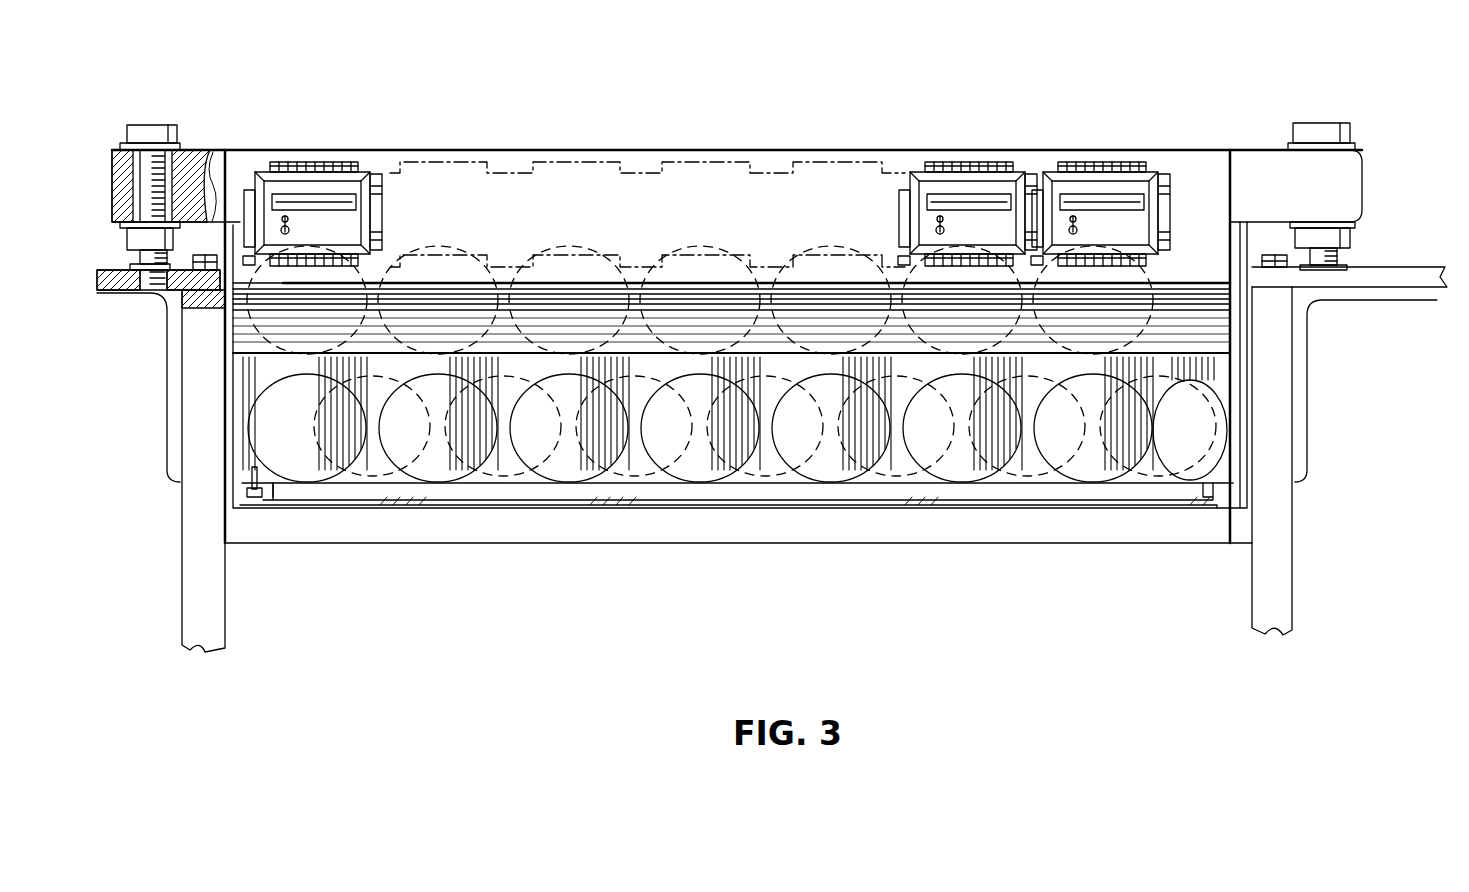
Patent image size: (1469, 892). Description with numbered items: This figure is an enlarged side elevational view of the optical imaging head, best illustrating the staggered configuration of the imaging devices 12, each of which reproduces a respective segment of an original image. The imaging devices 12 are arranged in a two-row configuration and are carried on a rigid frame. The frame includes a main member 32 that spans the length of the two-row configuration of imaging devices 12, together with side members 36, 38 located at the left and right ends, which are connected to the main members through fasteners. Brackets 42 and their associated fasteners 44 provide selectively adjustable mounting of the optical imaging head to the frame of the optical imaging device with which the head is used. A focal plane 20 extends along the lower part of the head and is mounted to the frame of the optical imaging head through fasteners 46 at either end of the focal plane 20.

The imaging devices 12 is at (485, 486).
The focal plane 20 is at (1190, 503).
The main member 32 is at (232, 150).
The side member 36 is at (190, 503).
The side member 38 is at (1292, 505).
The brackets 42 is at (125, 300).
The fasteners 44 is at (212, 148).
The fasteners 46 is at (150, 125).